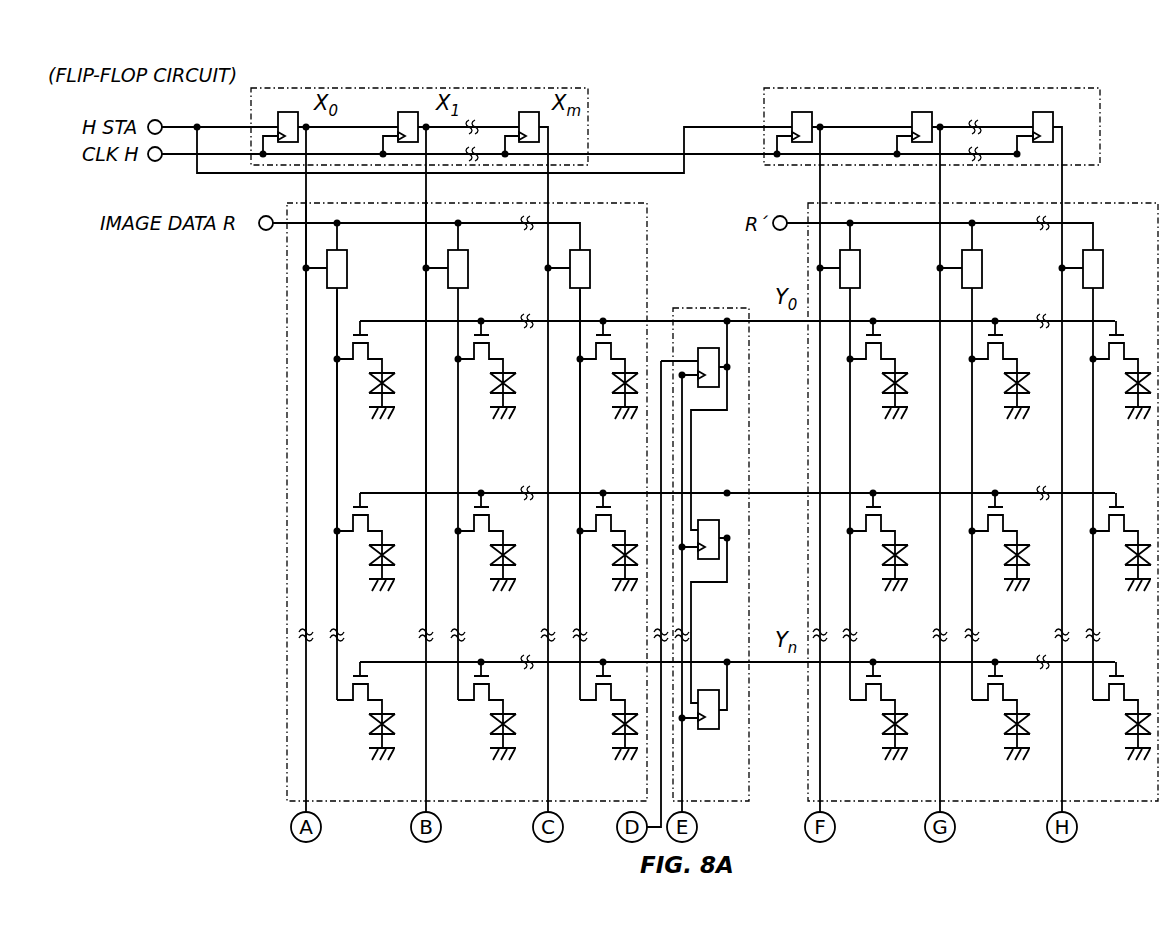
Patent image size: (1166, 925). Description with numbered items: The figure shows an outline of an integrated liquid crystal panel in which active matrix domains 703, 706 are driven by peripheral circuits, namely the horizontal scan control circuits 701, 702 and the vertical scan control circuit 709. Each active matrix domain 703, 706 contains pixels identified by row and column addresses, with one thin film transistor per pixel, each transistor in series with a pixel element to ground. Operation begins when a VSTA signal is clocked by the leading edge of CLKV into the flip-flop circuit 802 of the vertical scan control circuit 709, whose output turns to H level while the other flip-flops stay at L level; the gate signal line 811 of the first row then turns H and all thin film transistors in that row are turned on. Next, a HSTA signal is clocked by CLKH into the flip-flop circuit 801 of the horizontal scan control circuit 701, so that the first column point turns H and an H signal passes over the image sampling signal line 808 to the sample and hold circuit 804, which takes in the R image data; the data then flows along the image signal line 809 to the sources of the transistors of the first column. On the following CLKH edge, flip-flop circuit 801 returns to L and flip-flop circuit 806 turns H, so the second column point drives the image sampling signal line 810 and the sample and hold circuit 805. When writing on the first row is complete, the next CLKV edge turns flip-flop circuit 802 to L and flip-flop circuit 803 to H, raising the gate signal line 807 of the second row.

The horizontal scan control circuit 701 is at (570, 100).
The horizontal scan control circuit 702 is at (1083, 96).
The active matrix domain 703 is at (431, 500).
The active matrix domain 706 is at (1087, 795).
The vertical scan control circuit 709 is at (722, 563).
The flip-flop circuit 801 is at (287, 112).
The flip-flop circuit 802 is at (708, 350).
The flip-flop circuit 803 is at (705, 558).
The sample and hold circuit 804 is at (327, 277).
The sample and hold circuit 805 is at (448, 263).
The flip-flop circuit 806 is at (405, 112).
The gate signal line 807 is at (767, 494).
The image sampling signal line 808 is at (305, 352).
The image signal line 809 is at (338, 318).
The image sampling signal line 810 is at (428, 313).
The gate signal line 811 is at (589, 318).